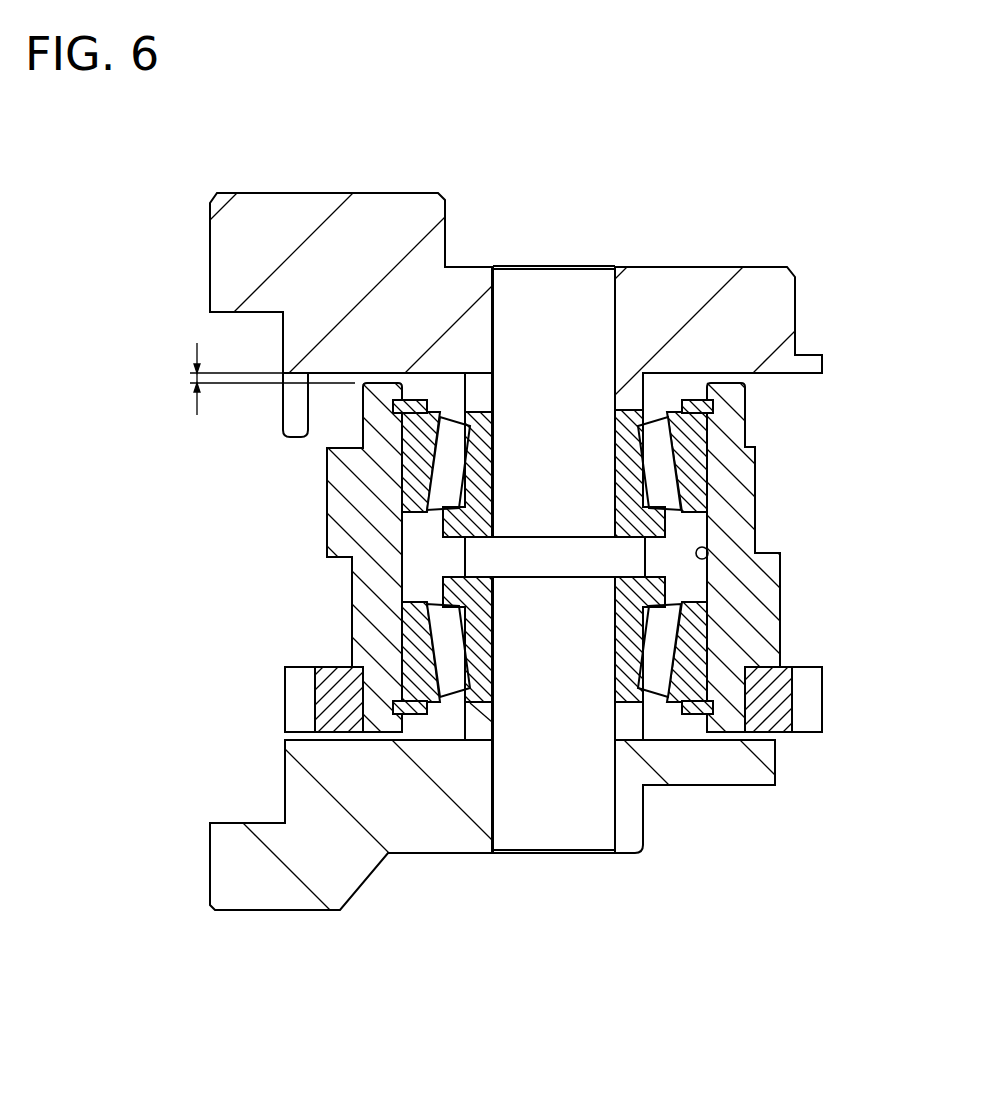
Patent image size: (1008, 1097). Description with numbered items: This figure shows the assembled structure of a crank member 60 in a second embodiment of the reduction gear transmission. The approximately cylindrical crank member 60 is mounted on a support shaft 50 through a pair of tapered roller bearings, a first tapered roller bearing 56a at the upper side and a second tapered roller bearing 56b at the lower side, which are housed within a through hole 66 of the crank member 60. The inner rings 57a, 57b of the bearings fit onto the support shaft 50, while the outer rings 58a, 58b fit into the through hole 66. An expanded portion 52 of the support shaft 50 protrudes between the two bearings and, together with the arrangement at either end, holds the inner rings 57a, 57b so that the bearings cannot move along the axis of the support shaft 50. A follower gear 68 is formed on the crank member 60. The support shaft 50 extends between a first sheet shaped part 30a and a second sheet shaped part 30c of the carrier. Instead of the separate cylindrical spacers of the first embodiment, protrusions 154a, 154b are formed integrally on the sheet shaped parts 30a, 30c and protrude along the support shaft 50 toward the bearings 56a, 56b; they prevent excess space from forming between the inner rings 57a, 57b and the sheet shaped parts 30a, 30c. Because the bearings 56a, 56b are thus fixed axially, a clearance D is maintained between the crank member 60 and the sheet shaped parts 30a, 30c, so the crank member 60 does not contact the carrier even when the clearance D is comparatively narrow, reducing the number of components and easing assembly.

The protrusion 154a is at (477, 393).
The protrusion 154b is at (478, 725).
The support shaft 50 is at (537, 295).
The expanded portion 52 is at (562, 557).
The first sheet shaped part 30a is at (742, 287).
The second sheet shaped part 30c is at (723, 768).
The first tapered roller bearing 56a is at (443, 478).
The second tapered roller bearing 56b is at (442, 622).
The inner ring 57a is at (467, 523).
The inner ring 57b is at (473, 645).
The outer ring 58a is at (405, 432).
The outer ring 58b is at (417, 670).
The crank member 60 is at (752, 588).
The through hole 66 is at (710, 558).
The follower gear 68 is at (777, 697).
The clearance D is at (254, 379).